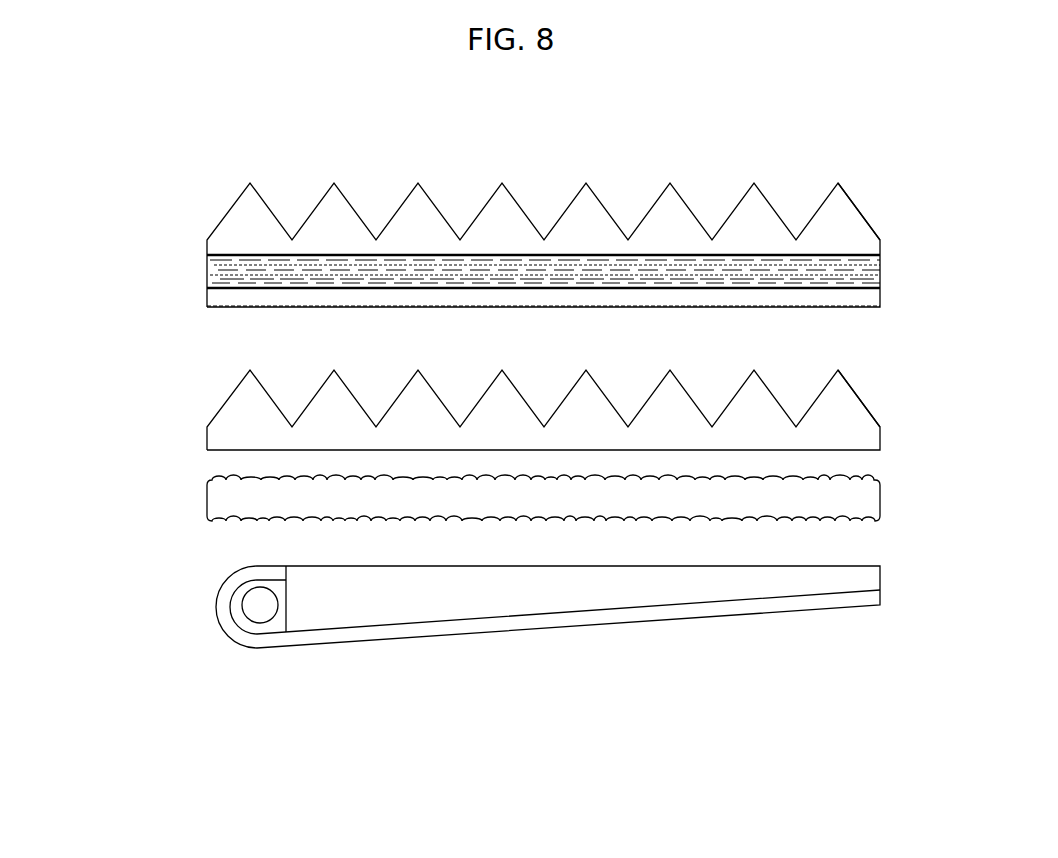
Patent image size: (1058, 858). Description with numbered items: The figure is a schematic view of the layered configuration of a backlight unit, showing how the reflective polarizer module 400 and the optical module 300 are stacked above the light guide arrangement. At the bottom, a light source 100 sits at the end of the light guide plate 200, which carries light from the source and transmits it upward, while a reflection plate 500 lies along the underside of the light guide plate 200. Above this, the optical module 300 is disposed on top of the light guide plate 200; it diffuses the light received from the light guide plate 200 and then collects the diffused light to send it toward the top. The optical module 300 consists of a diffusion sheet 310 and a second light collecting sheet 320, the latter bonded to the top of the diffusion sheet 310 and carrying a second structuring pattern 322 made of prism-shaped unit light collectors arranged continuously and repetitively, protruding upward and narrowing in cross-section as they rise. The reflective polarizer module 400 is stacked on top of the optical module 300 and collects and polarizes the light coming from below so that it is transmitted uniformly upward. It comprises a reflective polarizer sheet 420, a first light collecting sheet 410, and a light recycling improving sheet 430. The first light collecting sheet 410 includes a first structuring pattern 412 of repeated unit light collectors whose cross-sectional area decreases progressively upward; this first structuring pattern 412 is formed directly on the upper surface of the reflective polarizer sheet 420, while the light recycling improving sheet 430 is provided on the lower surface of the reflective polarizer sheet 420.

The light source 100 is at (257, 607).
The light guide plate 200 is at (365, 605).
The reflection plate 500 is at (563, 620).
The optical module 300 is at (507, 445).
The diffusion sheet 310 is at (217, 495).
The second light collecting sheet 320 is at (201, 411).
The second structuring pattern 322 is at (845, 428).
The reflective polarizer module 400 is at (506, 245).
The first light collecting sheet 410 is at (201, 215).
The first structuring pattern 412 is at (845, 233).
The reflective polarizer sheet 420 is at (210, 268).
The light recycling improving sheet 430 is at (222, 296).